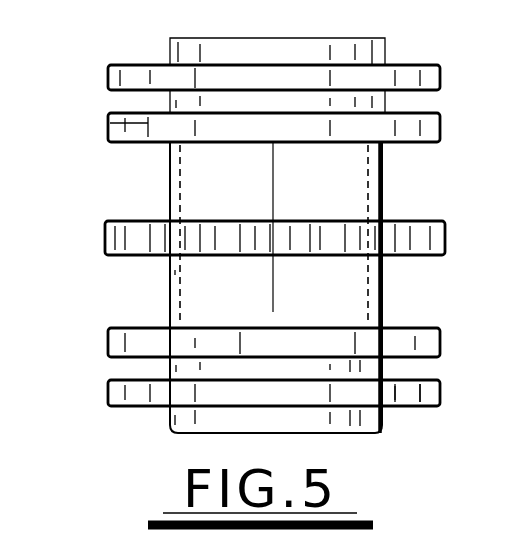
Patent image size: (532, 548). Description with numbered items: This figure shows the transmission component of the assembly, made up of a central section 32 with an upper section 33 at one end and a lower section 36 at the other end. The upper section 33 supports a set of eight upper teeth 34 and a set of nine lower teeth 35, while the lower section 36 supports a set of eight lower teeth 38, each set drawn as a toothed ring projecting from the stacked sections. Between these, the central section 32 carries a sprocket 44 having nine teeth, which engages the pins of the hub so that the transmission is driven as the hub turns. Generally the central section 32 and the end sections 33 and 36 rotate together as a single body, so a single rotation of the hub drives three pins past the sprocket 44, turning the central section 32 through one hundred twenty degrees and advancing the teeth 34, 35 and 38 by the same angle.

The central section 32 is at (233, 192).
The upper section 33 is at (270, 57).
The upper teeth 34 is at (127, 67).
The lower teeth 35 is at (110, 122).
The lower section 36 is at (210, 408).
The lower teeth 38 is at (415, 413).
The sprocket 44 is at (133, 237).